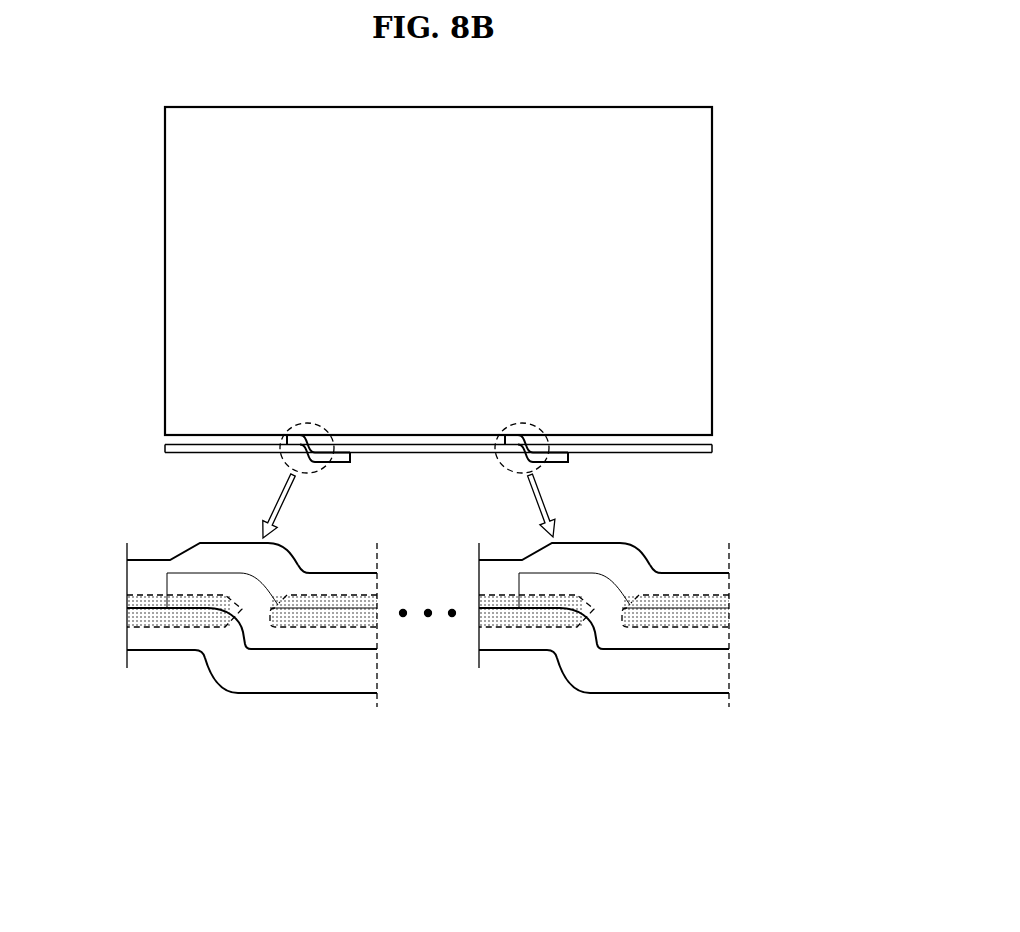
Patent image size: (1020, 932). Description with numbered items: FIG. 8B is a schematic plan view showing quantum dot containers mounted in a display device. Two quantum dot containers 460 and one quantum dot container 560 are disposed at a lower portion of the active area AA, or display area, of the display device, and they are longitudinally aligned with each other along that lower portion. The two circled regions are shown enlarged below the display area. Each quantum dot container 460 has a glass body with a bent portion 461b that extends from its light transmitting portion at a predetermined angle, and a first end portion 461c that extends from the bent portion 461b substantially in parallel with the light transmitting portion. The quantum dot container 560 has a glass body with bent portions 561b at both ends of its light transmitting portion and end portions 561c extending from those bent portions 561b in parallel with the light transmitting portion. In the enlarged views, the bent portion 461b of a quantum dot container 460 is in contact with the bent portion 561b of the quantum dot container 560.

The active area AA is at (692, 256).
The quantum dot container 460 is at (177, 452).
The quantum dot container 560 is at (422, 453).
The bent portion 461b is at (199, 689).
The first end portion 461c is at (293, 705).
The bent portion 561b is at (311, 571).
The end portion 561c is at (230, 536).